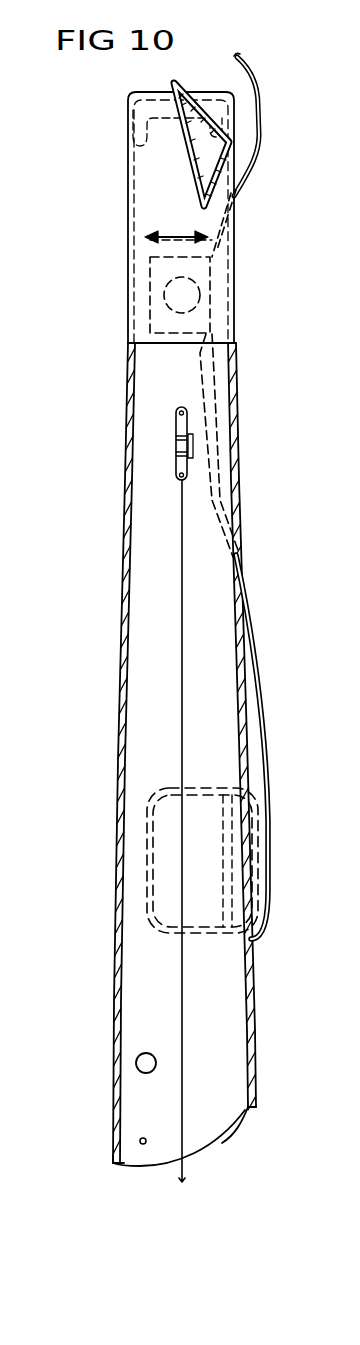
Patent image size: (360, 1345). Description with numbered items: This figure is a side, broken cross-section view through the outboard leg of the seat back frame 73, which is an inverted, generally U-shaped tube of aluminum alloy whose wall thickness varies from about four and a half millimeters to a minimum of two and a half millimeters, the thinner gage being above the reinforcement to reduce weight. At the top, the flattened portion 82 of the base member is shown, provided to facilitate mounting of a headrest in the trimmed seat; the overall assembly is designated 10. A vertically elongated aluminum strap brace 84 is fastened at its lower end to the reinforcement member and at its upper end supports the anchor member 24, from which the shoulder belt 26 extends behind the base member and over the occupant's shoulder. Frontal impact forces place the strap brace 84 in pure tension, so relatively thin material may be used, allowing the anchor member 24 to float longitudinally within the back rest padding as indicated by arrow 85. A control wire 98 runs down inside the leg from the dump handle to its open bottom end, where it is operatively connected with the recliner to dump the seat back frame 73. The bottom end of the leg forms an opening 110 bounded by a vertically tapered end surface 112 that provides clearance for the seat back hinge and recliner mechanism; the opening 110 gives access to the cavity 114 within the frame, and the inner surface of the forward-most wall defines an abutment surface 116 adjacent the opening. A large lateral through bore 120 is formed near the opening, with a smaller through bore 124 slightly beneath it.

The handle assembly 10 is at (244, 477).
The anchor member 24 is at (198, 276).
The shoulder belt 26 is at (262, 95).
The seat back frame 73 is at (258, 1009).
The flattened portion 82 is at (186, 160).
The strap brace 84 is at (263, 773).
The arrow 85 is at (177, 234).
The control wire 98 is at (182, 635).
The opening 110 is at (192, 1150).
The end surface 112 is at (232, 1128).
The cavity 114 is at (230, 1076).
The abutment surface 116 is at (126, 1160).
The through bore 120 is at (136, 1062).
The through bore 124 is at (140, 1140).